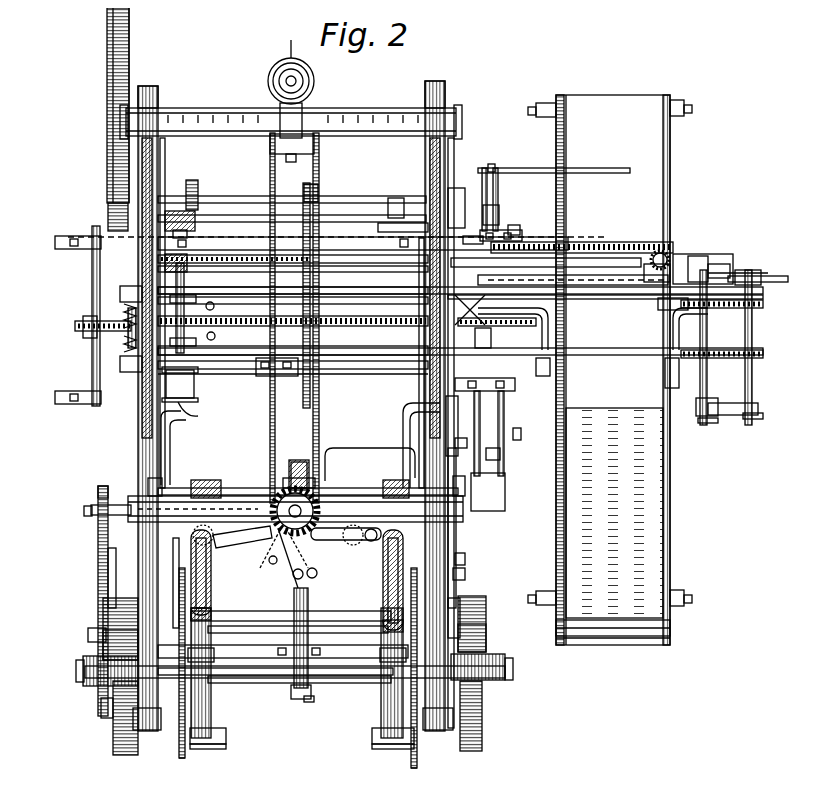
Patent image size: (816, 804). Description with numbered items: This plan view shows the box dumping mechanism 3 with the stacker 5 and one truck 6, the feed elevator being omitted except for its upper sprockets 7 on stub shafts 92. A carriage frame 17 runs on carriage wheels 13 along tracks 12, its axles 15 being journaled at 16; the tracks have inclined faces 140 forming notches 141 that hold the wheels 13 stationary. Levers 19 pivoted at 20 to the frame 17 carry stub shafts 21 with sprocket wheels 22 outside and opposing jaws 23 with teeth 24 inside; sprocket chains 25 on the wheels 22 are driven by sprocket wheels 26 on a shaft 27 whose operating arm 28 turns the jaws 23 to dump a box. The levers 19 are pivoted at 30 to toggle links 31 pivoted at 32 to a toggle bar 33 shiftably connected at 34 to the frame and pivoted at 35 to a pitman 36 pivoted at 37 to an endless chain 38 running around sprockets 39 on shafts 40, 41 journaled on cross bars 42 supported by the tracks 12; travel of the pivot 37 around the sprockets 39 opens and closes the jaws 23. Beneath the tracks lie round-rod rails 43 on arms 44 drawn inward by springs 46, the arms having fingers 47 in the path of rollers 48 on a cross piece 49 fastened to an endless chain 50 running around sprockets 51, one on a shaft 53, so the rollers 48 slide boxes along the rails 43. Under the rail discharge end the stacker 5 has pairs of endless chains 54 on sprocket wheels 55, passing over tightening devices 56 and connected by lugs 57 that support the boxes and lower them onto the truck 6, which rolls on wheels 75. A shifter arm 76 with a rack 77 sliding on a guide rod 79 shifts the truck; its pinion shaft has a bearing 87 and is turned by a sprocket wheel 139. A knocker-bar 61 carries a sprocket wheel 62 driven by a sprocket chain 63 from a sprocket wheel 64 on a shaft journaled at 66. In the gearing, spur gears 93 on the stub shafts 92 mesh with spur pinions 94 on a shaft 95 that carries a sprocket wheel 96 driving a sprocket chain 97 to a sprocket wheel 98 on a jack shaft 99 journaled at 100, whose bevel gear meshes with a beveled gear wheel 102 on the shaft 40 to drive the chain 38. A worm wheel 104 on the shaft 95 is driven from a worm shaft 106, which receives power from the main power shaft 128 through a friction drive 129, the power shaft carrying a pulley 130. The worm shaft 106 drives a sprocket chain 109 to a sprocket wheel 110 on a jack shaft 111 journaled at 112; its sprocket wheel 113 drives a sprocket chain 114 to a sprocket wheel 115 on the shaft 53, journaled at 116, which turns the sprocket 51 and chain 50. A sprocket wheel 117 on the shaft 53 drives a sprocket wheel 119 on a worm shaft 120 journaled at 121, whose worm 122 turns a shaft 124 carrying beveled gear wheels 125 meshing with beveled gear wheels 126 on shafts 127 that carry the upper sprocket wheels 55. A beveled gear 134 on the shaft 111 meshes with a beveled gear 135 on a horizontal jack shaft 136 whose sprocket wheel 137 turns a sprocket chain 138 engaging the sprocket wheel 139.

The box dumping mechanism 3 is at (307, 711).
The stacker 5 is at (713, 249).
The truck 6 is at (650, 182).
The upper sprockets 7 is at (322, 624).
The tracks 12 is at (152, 88).
The carriage wheels 13 is at (112, 477).
The axles 15 is at (270, 676).
The journals 16 is at (198, 472).
The carriage frame 17 is at (204, 576).
The levers 19 is at (205, 559).
The pivots 20 is at (205, 594).
The stub shafts 21 is at (176, 750).
The sprocket wheels 22 is at (176, 752).
The jaws 23 is at (208, 741).
The teeth 24 is at (216, 729).
The endless sprocket chains 25 is at (206, 699).
The sprocket wheels 26 is at (168, 574).
The shaft 27 is at (260, 613).
The operating arm 28 is at (165, 539).
The pivots 30 is at (363, 548).
The toggle links 31 is at (343, 536).
The pivots 32 is at (289, 553).
The toggle bar 33 is at (288, 452).
The shiftable connection 34 is at (288, 732).
The pivot 35 is at (306, 569).
The pitman 36 is at (285, 569).
The pitman pivot 37 is at (262, 478).
The endless chain 38 is at (312, 418).
The sprocket wheels 39 is at (306, 69).
The shaft 40 is at (310, 503).
The shaft 41 is at (262, 69).
The cross bars 42 is at (362, 110).
The rails 43 is at (112, 286).
The arms 44 is at (120, 278).
The springs 46 is at (120, 330).
The fingers 47 is at (440, 296).
The rollers 48 is at (207, 297).
The cross piece 49 is at (199, 330).
The endless chain 50 is at (378, 338).
The sprockets 51 is at (67, 316).
The shaft 53 is at (507, 216).
The endless chains 54 is at (717, 340).
The sprocket wheels 55 is at (655, 297).
The tightening devices 56 is at (494, 446).
The lugs 57 is at (542, 320).
The knocker-bar 61 is at (216, 478).
The sprocket wheel 62 is at (416, 384).
The sprocket chain 63 is at (398, 424).
The sprocket wheel 64 is at (458, 565).
The journal 66 is at (458, 550).
The wheels 75 is at (526, 103).
The shifter arm 76 is at (504, 160).
The rack 77 is at (470, 384).
The guide rod 79 is at (498, 461).
The bearing 87 is at (264, 368).
The stub shafts 92 is at (68, 662).
The spur gears 93 is at (95, 599).
The spur pinions 94 is at (95, 619).
The shaft 95 is at (80, 627).
The sprocket wheel 96 is at (93, 697).
The sprocket chain 97 is at (90, 549).
The sprocket wheel 98 is at (92, 480).
The jack shaft 99 is at (76, 502).
The journal 100 is at (85, 496).
The beveled gear wheel 102 is at (305, 456).
The worm wheel 104 is at (455, 591).
The worm shaft 106 is at (398, 265).
The sprocket chain 109 is at (336, 308).
The sprocket wheel 110 is at (178, 308).
The jack shaft 111 is at (192, 408).
The journal 112 is at (190, 374).
The sprocket wheel 113 is at (185, 260).
The sprocket chain 114 is at (238, 264).
The sprocket wheel 115 is at (546, 255).
The journal 116 is at (510, 228).
The sprocket wheel 117 is at (505, 232).
The sprocket wheel 119 is at (686, 248).
The worm shaft 120 is at (652, 244).
The journal 121 is at (600, 291).
The worm 122 is at (640, 256).
The shaft 124 is at (574, 268).
The beveled gear wheels 125 is at (706, 256).
The beveled gear wheels 126 is at (716, 265).
The shafts 127 is at (512, 424).
The main power shaft 128 is at (100, 208).
The friction drive 129 is at (459, 185).
The pulley 130 is at (96, 84).
The beveled gear 134 is at (187, 214).
The beveled gear 135 is at (190, 180).
The horizontal jack shaft 136 is at (234, 206).
The sprocket wheel 137 is at (310, 176).
The sprocket chain 138 is at (312, 194).
The sprocket wheel 139 is at (298, 396).
The inclined faces 140 is at (125, 145).
The notches 141 is at (140, 78).